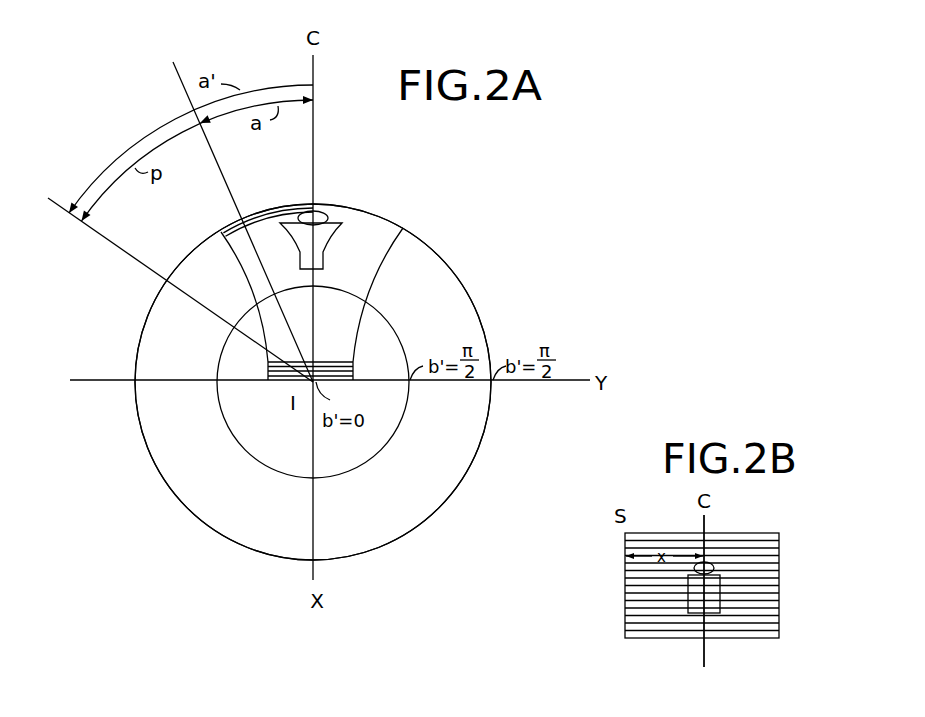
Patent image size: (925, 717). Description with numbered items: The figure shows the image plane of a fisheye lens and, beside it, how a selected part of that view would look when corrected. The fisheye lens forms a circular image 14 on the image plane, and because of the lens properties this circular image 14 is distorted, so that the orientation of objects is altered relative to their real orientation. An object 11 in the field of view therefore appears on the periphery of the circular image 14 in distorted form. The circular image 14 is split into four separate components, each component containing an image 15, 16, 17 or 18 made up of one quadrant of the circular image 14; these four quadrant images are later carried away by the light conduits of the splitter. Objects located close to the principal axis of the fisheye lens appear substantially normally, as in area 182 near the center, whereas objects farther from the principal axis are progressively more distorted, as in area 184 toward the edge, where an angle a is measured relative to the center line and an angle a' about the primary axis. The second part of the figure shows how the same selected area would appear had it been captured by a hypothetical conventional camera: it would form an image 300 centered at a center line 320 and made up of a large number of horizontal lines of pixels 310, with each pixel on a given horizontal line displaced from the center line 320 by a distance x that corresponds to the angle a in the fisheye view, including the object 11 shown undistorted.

In FIG. 2A, the object 11 is at (336, 238).
In FIG. 2B, the object 11 is at (687, 589).
In FIG. 2A, the circular image 14 is at (508, 291).
In FIG. 2A, the image 15 is at (440, 270).
In FIG. 2A, the image 16 is at (430, 503).
In FIG. 2A, the image 17 is at (228, 523).
In FIG. 2A, the image 18 is at (155, 328).
In FIG. 2A, the area 182 is at (240, 420).
In FIG. 2A, the area 184 is at (237, 230).
In FIG. 2B, the image 300 is at (745, 552).
In FIG. 2B, the horizontal lines of pixels 310 is at (782, 543).
In FIG. 2B, the center line 320 is at (706, 630).